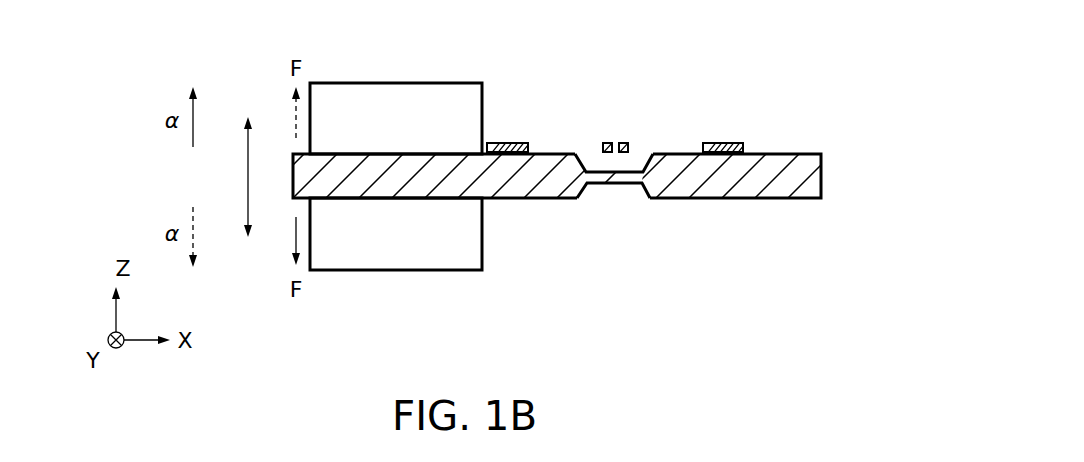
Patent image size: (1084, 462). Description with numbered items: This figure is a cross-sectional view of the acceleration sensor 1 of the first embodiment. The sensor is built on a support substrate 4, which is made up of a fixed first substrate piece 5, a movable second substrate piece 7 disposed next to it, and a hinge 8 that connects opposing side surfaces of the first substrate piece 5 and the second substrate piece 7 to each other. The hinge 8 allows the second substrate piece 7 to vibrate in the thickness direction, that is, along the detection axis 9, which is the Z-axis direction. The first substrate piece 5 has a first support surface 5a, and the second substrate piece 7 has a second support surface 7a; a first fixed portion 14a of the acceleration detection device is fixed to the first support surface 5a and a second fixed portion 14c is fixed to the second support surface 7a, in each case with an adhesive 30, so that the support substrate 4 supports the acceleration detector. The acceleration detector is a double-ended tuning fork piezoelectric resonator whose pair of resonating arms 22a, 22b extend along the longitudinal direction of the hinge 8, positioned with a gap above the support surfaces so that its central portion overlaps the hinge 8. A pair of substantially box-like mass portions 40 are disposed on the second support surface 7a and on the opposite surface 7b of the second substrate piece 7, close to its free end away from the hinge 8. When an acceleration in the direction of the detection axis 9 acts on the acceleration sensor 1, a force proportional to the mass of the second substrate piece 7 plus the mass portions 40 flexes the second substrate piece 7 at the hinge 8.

The acceleration sensor 1 is at (854, 99).
The support substrate 4 is at (567, 216).
The first substrate piece 5 is at (787, 199).
The first support surface 5a is at (787, 155).
The second substrate piece 7 is at (546, 192).
The second support surface 7a is at (550, 154).
The surface of the second substrate piece facing away from the second support surfac 7b is at (548, 200).
The hinge 8 is at (627, 184).
The detection axis 9 is at (248, 180).
The first fixed portion 14a is at (727, 142).
The second fixed portion 14c is at (513, 142).
The resonating arm 22a is at (606, 143).
The resonating arm 22b is at (624, 143).
The adhesive 30 is at (507, 155).
The mass portion 40 is at (448, 92).